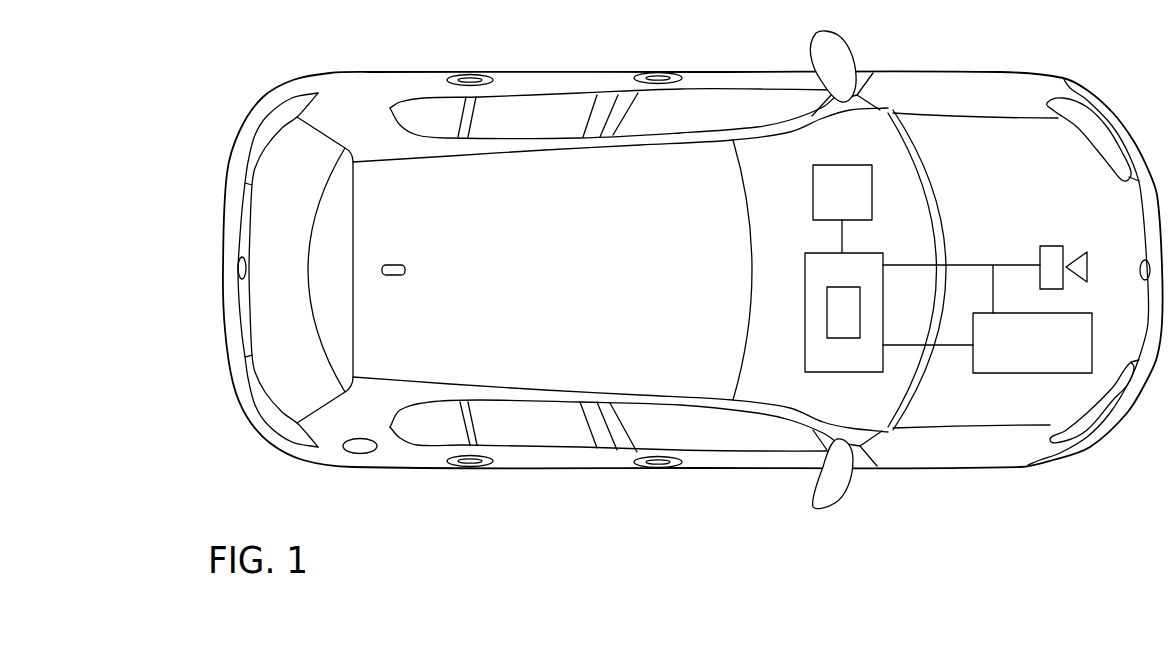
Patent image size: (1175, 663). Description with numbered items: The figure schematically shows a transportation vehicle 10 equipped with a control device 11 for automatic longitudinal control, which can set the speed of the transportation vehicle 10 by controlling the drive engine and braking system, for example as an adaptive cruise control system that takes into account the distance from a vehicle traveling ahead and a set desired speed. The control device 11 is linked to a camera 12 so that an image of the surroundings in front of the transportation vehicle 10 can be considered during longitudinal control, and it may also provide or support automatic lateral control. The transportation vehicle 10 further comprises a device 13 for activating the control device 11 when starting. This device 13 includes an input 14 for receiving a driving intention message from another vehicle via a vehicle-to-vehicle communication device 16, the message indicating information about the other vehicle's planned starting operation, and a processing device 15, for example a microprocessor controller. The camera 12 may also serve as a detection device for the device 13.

The transportation vehicle 10 is at (927, 72).
The control device 11 is at (1008, 372).
The camera 12 is at (1047, 246).
The device for activating the automatic control device 13 is at (885, 257).
The input 14 is at (842, 247).
The processing device 15 is at (828, 320).
The vehicle-to-vehicle communication device 16 is at (843, 166).